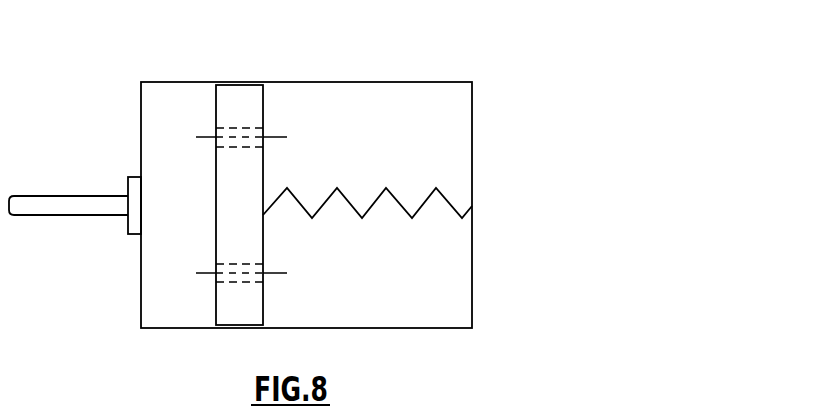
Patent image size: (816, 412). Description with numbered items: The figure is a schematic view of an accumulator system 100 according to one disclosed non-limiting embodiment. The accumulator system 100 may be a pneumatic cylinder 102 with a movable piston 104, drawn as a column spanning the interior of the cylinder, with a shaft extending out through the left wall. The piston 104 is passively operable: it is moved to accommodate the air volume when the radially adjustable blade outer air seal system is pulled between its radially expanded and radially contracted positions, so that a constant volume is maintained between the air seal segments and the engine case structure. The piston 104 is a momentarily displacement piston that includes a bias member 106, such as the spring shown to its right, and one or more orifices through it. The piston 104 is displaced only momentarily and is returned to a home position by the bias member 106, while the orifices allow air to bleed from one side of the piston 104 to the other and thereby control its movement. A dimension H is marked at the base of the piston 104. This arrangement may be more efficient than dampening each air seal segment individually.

The accumulator system 100 is at (447, 56).
The pneumatic cylinder 102 is at (178, 97).
The piston 104 is at (235, 98).
The bias member 106 is at (398, 203).
The height dimension H is at (245, 328).